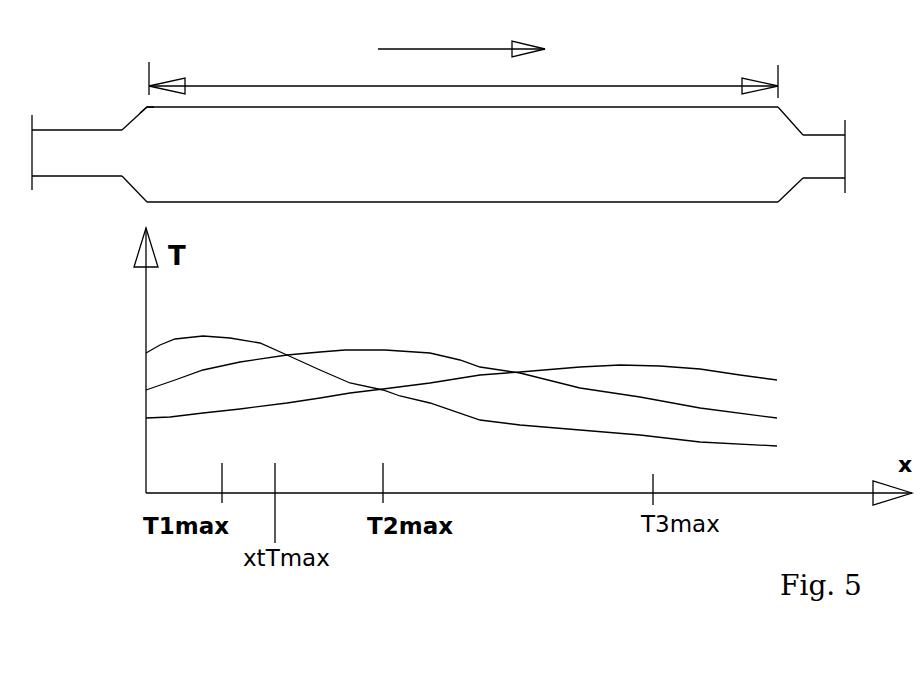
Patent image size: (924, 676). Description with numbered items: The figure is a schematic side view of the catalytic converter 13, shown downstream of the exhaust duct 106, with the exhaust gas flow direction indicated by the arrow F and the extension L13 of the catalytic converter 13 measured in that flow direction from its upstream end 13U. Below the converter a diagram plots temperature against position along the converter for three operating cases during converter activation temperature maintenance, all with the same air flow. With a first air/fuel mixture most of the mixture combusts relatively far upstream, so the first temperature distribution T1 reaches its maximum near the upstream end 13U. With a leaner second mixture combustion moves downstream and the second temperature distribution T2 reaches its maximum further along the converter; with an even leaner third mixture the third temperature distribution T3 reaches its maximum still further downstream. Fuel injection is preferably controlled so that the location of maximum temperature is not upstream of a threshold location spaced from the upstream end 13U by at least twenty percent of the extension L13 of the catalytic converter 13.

The catalytic converter 13 is at (473, 170).
The upstream end of the catalytic converter 13U is at (147, 107).
The exhaust duct 106 is at (95, 166).
The extension of the catalytic converter L13 is at (618, 86).
The gas flow direction F is at (449, 49).
The first temperature distribution T1 is at (223, 339).
The second temperature distribution T2 is at (390, 350).
The third temperature distribution T3 is at (680, 365).